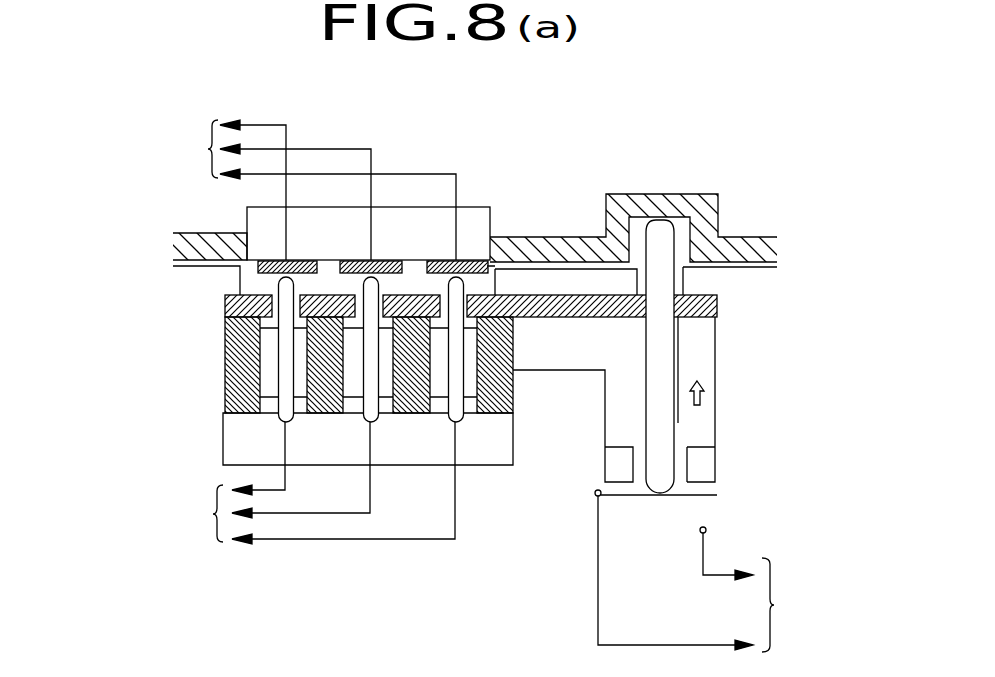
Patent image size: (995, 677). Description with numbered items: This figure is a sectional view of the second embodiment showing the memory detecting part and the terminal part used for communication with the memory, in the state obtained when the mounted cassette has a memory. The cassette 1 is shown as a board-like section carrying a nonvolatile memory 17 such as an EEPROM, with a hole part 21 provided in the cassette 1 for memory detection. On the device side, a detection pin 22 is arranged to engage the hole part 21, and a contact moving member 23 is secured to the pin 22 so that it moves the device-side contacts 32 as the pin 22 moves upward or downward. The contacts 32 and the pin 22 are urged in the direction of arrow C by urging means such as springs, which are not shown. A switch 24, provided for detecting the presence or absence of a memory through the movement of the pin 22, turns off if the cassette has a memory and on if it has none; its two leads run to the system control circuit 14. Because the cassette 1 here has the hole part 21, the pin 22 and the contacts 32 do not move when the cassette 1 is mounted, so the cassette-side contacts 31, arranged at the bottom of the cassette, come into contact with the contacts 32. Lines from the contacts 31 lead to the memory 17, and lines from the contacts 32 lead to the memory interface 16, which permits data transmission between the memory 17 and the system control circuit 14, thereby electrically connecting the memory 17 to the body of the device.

The cassette 1 is at (738, 247).
The hole part 21 is at (638, 232).
The detection pin 22 is at (660, 228).
The contact moving member 23 is at (718, 305).
The switch 24 is at (685, 515).
The contacts 31 is at (298, 260).
The contacts 32 is at (283, 280).
The arrow C is at (704, 397).
The system control circuit 14 is at (752, 578).
The memory interface 16 is at (266, 496).
The nonvolatile memory 17 is at (249, 190).